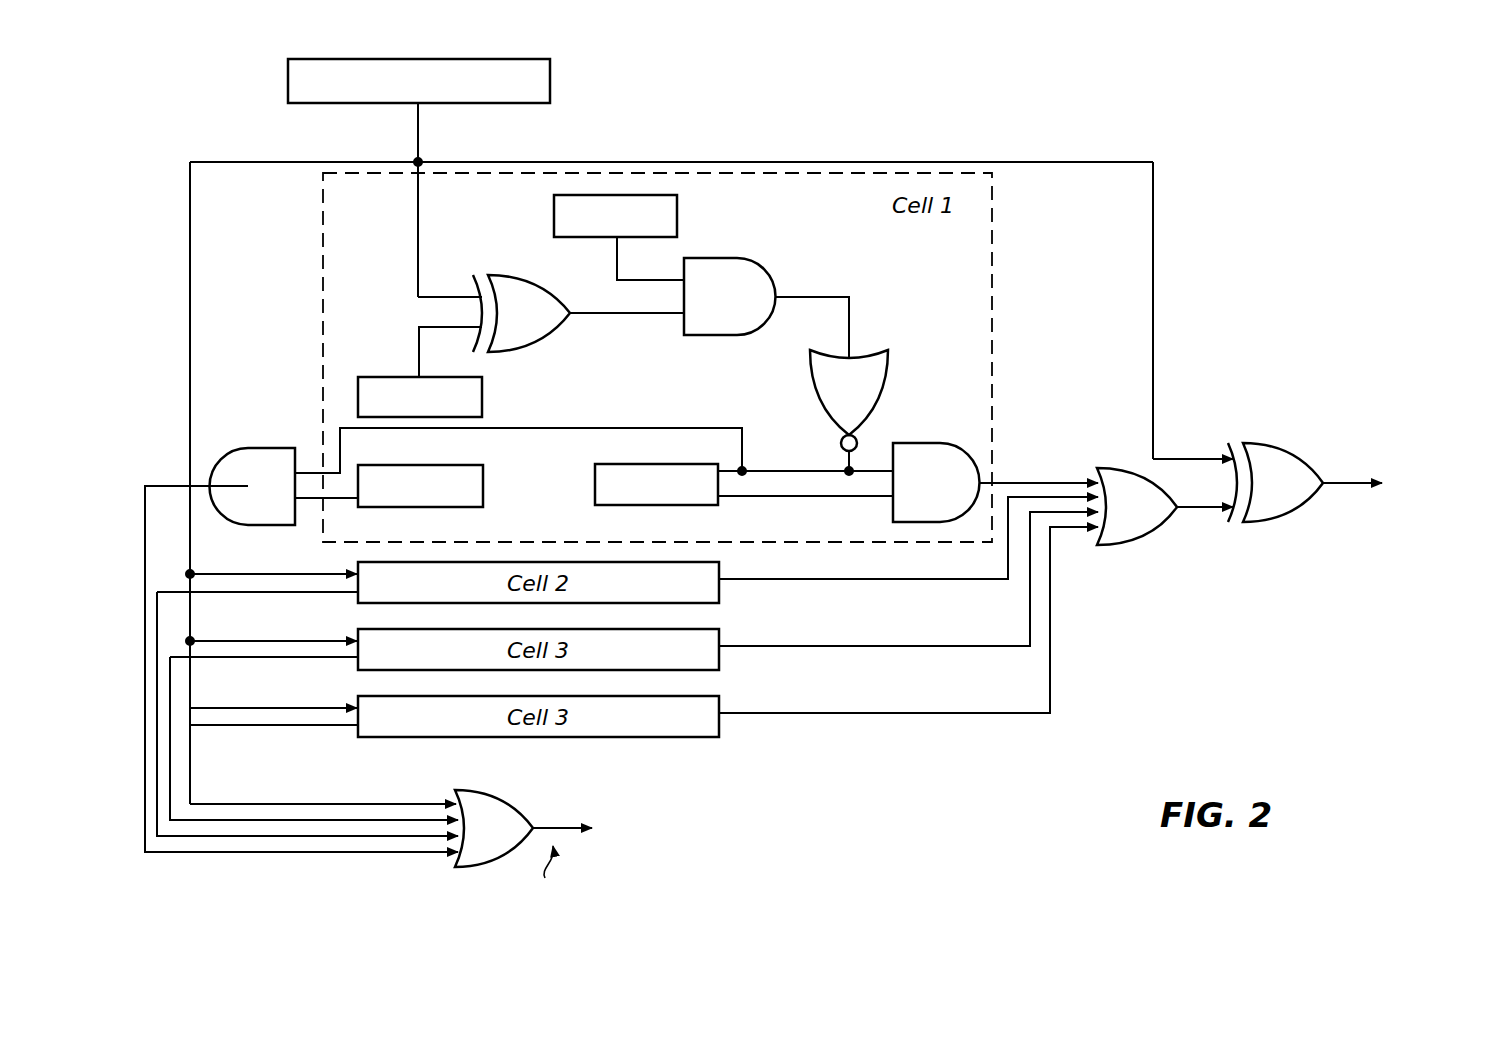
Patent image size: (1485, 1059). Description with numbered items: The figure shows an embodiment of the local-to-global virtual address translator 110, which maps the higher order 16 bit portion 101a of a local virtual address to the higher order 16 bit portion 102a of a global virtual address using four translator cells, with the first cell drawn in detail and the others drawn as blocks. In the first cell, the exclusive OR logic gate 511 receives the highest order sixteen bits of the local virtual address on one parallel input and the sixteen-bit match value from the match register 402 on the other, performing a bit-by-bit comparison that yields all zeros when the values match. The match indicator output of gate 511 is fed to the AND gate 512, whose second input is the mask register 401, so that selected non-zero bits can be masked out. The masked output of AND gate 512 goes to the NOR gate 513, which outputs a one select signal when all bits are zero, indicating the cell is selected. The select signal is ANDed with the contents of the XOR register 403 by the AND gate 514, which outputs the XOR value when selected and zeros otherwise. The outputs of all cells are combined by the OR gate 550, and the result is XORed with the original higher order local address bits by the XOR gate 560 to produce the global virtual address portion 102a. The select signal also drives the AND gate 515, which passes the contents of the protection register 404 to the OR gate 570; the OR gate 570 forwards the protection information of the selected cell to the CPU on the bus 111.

The higher order 16 bit portion of local virtual address 101a is at (550, 72).
The 16 bit 16 is at (427, 127).
The mask register 401 is at (677, 206).
The match register 402 is at (482, 387).
The XOR register 403 is at (595, 490).
The protection register 404 is at (483, 472).
The exclusive OR logic gate 511 is at (521, 313).
The AND gate 512 is at (730, 296).
The NOR gate 513 is at (849, 410).
The AND gate 514 is at (936, 482).
The AND gate 515 is at (552, 476).
The OR gate 550 is at (1137, 506).
The XOR gate 560 is at (1275, 482).
The OR gate 570 is at (345, 729).
The higher order 16 bit portion of global virtual address 102a is at (1357, 488).
The local-to-global virtual address translator 110 is at (1128, 598).
The bus 111 is at (145, 510).